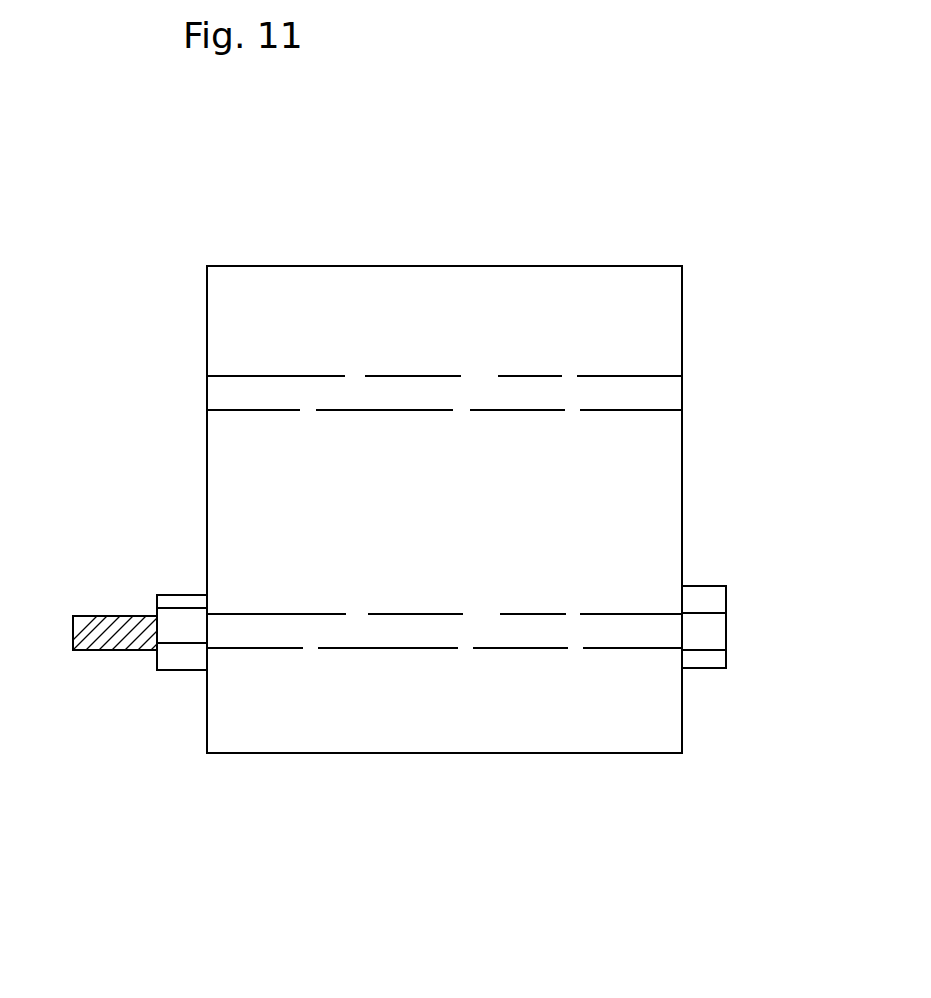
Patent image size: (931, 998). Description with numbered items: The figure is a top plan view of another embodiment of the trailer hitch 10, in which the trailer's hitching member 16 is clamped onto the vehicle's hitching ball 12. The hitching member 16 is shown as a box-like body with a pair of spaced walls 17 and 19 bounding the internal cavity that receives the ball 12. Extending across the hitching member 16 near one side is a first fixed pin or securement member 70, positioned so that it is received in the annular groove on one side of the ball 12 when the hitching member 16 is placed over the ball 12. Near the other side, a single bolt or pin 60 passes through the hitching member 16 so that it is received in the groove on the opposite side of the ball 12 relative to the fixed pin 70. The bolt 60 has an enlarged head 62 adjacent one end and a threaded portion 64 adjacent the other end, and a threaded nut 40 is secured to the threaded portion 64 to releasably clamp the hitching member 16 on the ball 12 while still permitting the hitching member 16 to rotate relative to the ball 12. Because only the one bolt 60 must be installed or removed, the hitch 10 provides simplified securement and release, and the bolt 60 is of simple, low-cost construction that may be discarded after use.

The trailer hitch 10 is at (506, 509).
The hitching ball 12 is at (390, 222).
The hitching member 16 is at (501, 753).
The spaced wall 17 is at (682, 323).
The spaced wall 19 is at (207, 500).
The threaded nut 40 is at (170, 672).
The bolt 60 is at (98, 614).
The enlarged head 62 is at (726, 632).
The threaded portion 64 is at (95, 652).
The fixed pin 70 is at (662, 394).